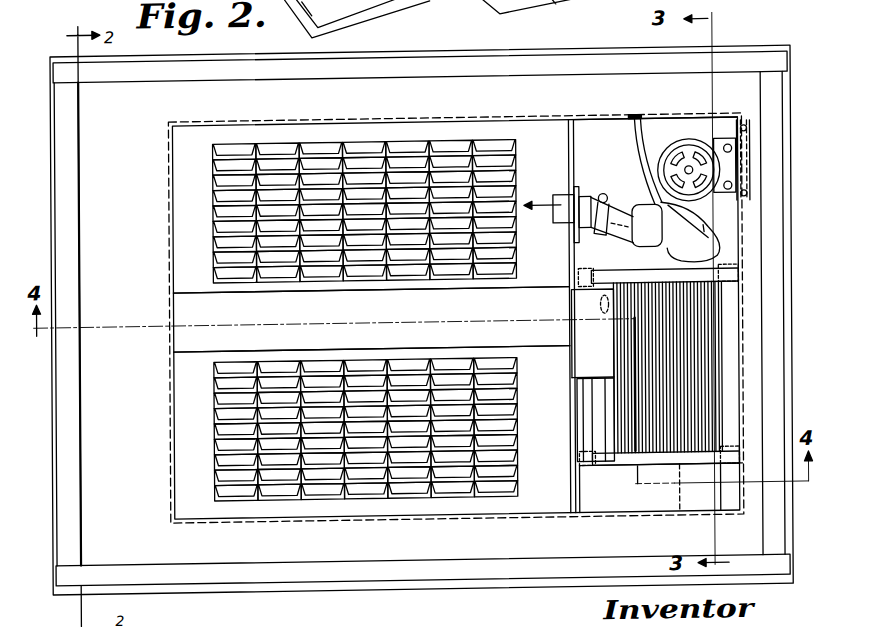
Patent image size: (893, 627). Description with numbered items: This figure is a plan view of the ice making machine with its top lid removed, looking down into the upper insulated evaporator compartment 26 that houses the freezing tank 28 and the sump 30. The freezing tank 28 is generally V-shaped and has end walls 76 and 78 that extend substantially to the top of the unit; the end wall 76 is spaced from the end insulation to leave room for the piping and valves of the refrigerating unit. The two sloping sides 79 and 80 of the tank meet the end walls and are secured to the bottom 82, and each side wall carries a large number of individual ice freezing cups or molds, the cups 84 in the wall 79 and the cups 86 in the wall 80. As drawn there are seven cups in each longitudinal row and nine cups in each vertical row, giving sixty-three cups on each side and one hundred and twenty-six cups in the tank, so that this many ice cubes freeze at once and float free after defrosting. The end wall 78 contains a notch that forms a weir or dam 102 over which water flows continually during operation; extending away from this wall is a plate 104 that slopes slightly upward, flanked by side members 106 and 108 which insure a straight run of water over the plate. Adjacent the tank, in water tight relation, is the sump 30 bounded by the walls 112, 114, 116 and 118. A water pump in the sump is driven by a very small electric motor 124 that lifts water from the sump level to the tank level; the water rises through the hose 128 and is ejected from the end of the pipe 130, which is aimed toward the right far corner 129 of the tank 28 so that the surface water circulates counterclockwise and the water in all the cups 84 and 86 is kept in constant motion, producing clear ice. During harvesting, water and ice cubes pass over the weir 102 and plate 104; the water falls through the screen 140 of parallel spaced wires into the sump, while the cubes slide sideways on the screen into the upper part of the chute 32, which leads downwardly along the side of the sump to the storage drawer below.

The evaporator compartment 26 is at (155, 539).
The freezing tank 28 is at (170, 304).
The sump 30 is at (603, 141).
The chute 32 is at (622, 509).
The end wall 76 is at (168, 157).
The end wall 78 is at (575, 476).
The side wall 79 is at (344, 449).
The side wall 80 is at (346, 192).
The bottom 82 is at (193, 344).
The ice freezing cups 84 is at (243, 496).
The ice freezing cups 86 is at (355, 157).
The weir 102 is at (580, 342).
The plate 104 is at (583, 374).
The side member 106 is at (590, 392).
The side member 108 is at (567, 299).
The sump wall 112 is at (672, 137).
The sump wall 114 is at (727, 136).
The sump wall 116 is at (700, 470).
The sump wall 118 is at (575, 146).
The electric motor 124 is at (680, 178).
The hose 128 is at (663, 215).
The right far corner 129 is at (182, 123).
The pipe 130 is at (558, 204).
The screen 140 is at (675, 407).